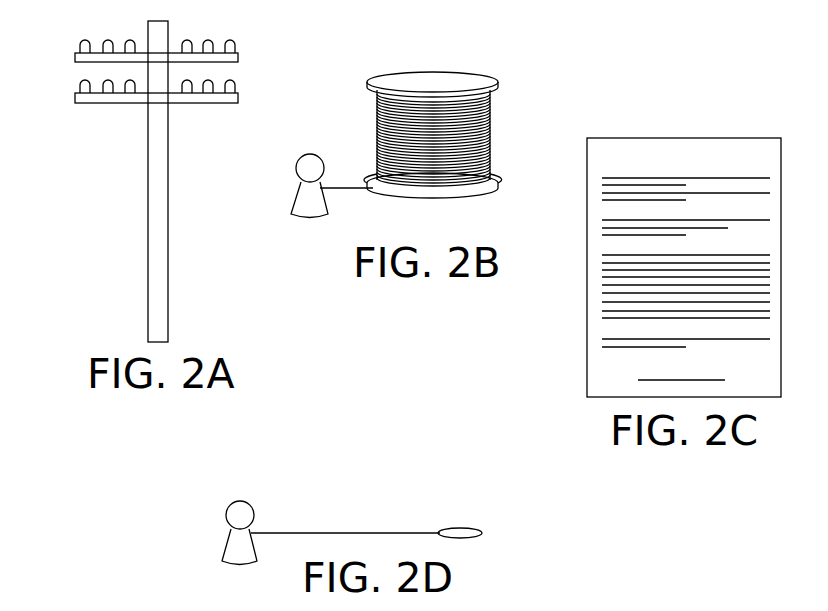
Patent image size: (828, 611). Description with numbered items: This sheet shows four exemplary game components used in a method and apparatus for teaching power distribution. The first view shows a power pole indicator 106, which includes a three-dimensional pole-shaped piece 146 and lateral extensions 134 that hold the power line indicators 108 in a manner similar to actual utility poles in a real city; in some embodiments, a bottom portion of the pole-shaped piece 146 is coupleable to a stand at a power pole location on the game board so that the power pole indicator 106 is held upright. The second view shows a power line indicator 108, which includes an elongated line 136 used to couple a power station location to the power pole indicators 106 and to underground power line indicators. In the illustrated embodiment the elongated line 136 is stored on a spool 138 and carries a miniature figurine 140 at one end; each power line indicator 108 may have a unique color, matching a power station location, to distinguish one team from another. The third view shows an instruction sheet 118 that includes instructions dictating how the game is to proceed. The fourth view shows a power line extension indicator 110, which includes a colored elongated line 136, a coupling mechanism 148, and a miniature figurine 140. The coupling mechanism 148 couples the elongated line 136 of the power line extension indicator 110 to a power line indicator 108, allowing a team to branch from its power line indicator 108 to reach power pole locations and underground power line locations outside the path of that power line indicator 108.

In FIG. 2A, the power pole indicator 106 is at (167, 181).
In FIG. 2A, the lateral extensions 134 is at (118, 104).
In FIG. 2A, the pole-shaped piece 146 is at (148, 243).
In FIG. 2B, the power line indicator 108 is at (440, 121).
In FIG. 2B, the spool 138 is at (447, 82).
In FIG. 2B, the elongated line 136 is at (342, 189).
In FIG. 2D, the elongated line 136 is at (333, 533).
In FIG. 2B, the miniature figurine 140 is at (320, 154).
In FIG. 2D, the miniature figurine 140 is at (229, 542).
In FIG. 2C, the instruction sheet 118 is at (698, 138).
In FIG. 2D, the power line extension indicator 110 is at (327, 492).
In FIG. 2D, the coupling mechanism 148 is at (465, 528).